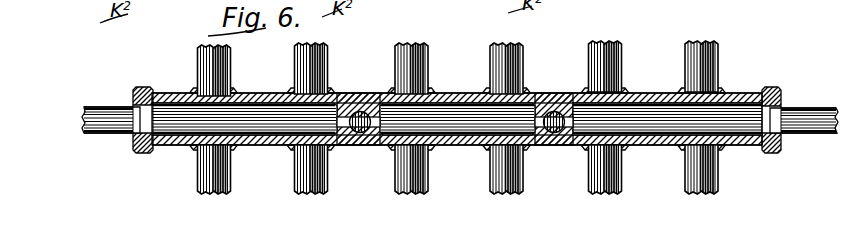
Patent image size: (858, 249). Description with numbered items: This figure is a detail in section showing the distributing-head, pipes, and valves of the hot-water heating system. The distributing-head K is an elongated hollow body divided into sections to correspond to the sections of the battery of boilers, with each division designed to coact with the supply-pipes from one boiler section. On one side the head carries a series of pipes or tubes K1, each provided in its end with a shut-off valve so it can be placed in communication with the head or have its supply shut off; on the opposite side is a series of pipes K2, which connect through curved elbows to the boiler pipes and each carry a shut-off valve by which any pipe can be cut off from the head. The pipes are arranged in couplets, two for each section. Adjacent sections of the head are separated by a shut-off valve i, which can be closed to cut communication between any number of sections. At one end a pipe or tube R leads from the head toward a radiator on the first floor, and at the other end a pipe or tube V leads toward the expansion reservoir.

The pipe or tube R is at (117, 117).
The distributing-head K is at (413, 135).
The pipes or tubes K1 is at (307, 173).
The pipes K2 is at (299, 71).
The shut-off valve i is at (358, 134).
The pipe or tube V is at (837, 85).